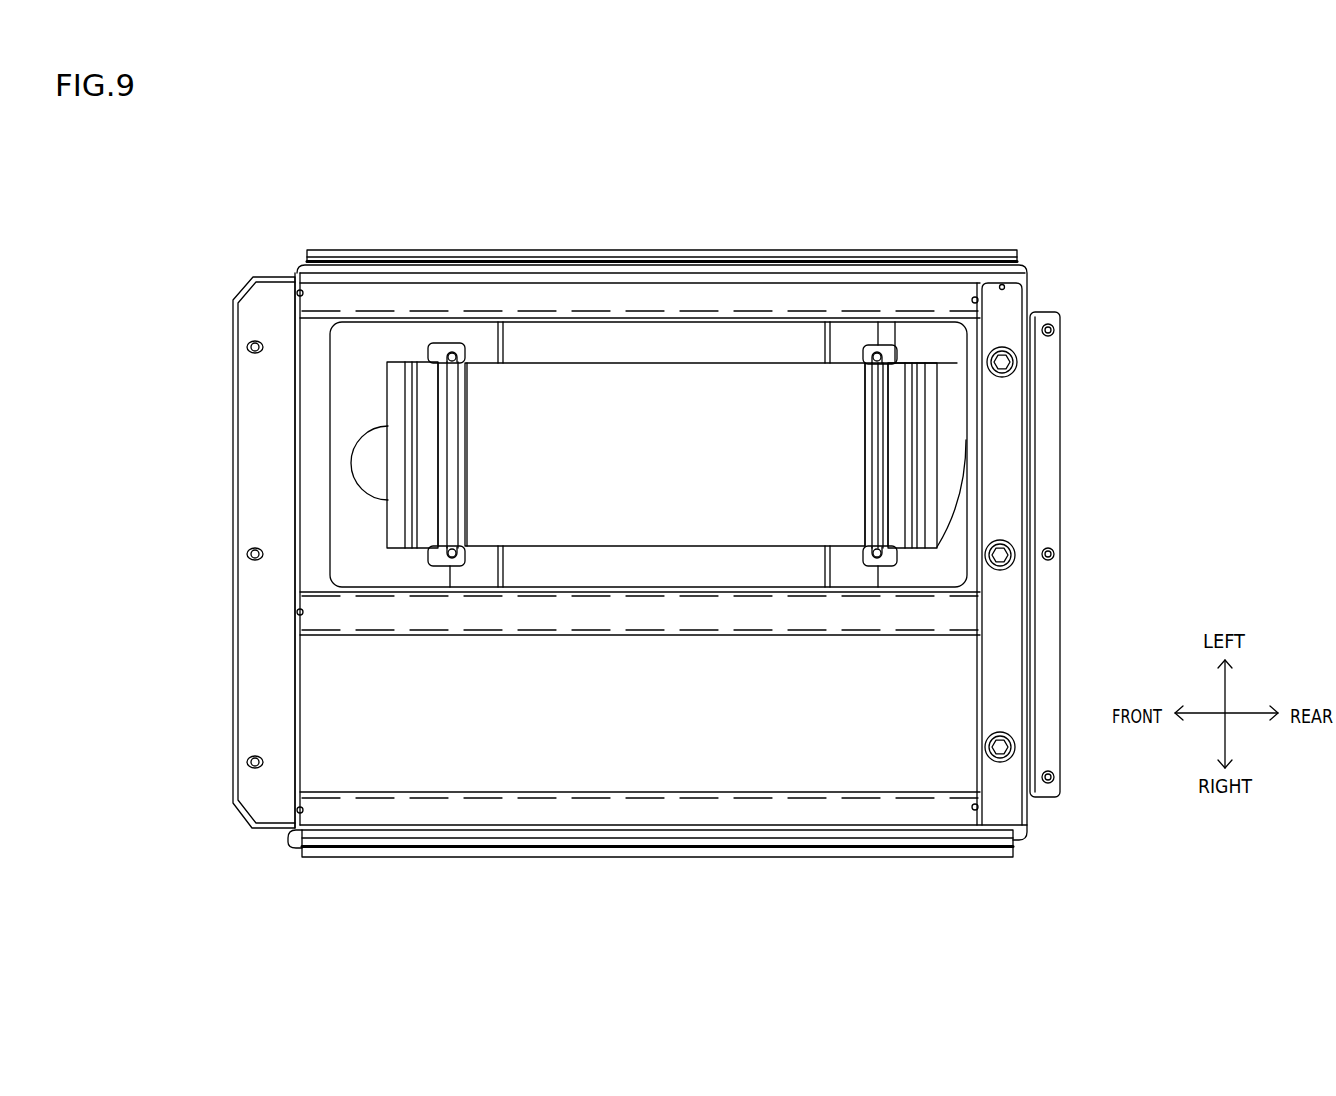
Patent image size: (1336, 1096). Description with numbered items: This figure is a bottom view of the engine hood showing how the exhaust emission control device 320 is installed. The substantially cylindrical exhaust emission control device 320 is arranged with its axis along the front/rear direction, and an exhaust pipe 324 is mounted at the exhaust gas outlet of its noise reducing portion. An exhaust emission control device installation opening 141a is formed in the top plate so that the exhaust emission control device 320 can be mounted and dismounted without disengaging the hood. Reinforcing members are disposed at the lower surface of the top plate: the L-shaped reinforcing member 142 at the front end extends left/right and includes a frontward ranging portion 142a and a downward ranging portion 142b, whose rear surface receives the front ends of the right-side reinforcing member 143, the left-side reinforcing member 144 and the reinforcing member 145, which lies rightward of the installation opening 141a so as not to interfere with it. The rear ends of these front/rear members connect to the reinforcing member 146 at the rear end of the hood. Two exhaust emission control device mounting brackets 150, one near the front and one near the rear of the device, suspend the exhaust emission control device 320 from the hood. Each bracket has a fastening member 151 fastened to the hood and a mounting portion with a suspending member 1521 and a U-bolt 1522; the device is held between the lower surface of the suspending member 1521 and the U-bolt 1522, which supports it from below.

The exhaust emission control device installation opening 141a is at (775, 330).
The reinforcing member 142 is at (181, 550).
The frontward ranging portion 142a is at (245, 673).
The downward ranging portion 142b is at (300, 741).
The reinforcing member 143 is at (720, 800).
The reinforcing member 144 is at (655, 295).
The reinforcing member 145 is at (663, 620).
The reinforcing member 146 is at (1013, 305).
The exhaust emission control device mounting bracket 150 is at (440, 340).
The fastening member 151 is at (480, 330).
The exhaust emission control device 320 is at (650, 373).
The exhaust pipe 324 is at (367, 460).
The suspending member 1521 is at (463, 353).
The U-bolt 1522 is at (455, 457).